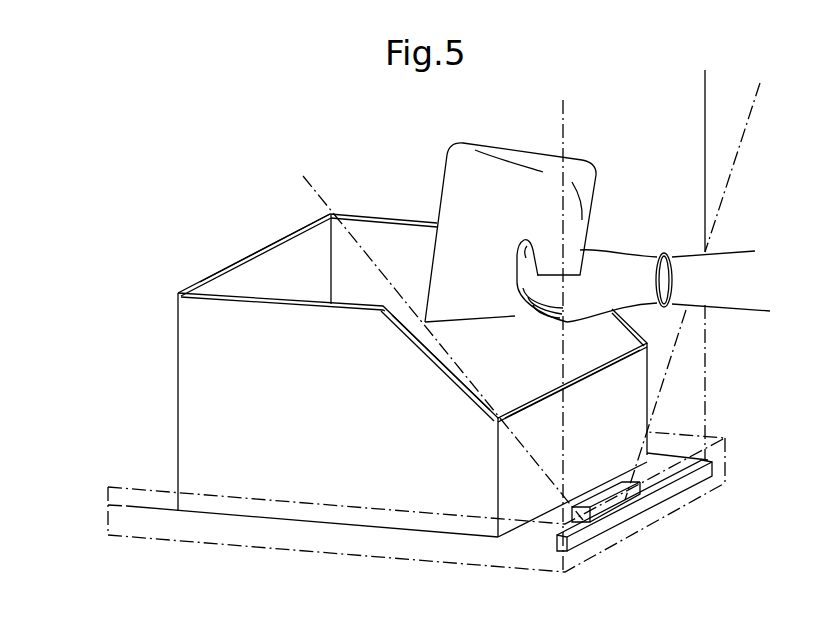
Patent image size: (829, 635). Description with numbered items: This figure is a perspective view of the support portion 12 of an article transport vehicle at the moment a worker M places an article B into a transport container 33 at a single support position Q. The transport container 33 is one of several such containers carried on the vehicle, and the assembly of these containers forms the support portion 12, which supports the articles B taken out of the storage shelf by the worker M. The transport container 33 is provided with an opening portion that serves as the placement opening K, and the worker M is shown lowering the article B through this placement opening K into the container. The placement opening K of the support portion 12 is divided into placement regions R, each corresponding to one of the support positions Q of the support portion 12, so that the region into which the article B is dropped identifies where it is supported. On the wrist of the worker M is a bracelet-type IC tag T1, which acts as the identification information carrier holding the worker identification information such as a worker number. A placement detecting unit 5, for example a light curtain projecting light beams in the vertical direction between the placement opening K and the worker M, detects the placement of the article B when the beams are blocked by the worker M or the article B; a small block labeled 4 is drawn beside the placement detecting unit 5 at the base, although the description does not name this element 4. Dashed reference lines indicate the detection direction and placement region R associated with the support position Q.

The support portion 12 is at (258, 185).
The transport container 33 is at (247, 252).
The article B is at (441, 192).
The bracelet-type IC tag T1 is at (660, 254).
The placement region R is at (728, 197).
The worker M is at (737, 300).
The placement opening K is at (575, 350).
The stopper block 4 is at (573, 515).
The placement detecting unit 5 is at (558, 539).
The support position Q is at (104, 503).